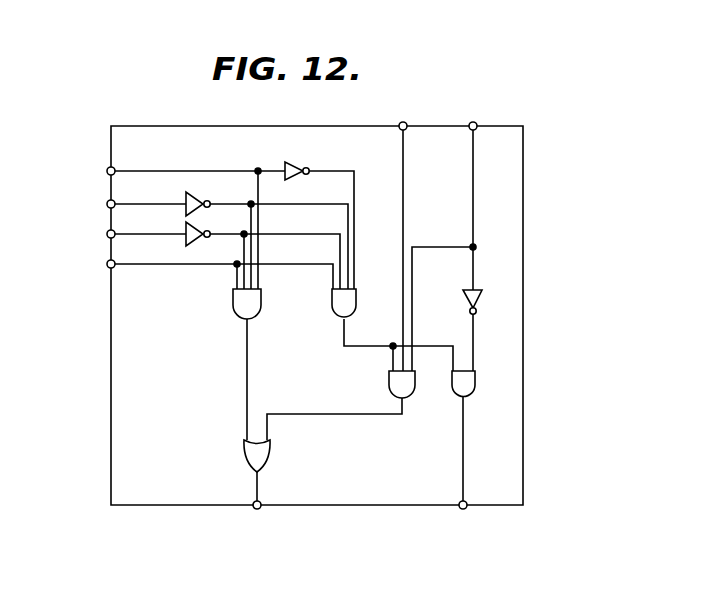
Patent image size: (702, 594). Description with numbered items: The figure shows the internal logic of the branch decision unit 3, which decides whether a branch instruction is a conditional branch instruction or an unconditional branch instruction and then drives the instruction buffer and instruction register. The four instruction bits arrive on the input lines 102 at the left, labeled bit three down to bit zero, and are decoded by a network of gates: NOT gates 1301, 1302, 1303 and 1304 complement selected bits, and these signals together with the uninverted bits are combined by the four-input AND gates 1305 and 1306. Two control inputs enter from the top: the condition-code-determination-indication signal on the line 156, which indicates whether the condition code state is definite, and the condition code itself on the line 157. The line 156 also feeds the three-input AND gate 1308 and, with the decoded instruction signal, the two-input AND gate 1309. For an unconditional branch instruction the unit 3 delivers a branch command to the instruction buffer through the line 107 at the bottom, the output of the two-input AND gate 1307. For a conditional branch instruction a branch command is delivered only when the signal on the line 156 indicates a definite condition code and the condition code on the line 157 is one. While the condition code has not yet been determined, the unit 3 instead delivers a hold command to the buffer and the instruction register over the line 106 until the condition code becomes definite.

The branch decision unit 3 is at (524, 322).
The data bit input lines (BIT 0 - BIT 3) 102 is at (100, 163).
The line 106 is at (460, 511).
The line 107 is at (254, 510).
The line 156 is at (477, 122).
The line 157 is at (400, 122).
The NOT gate 1301 is at (190, 192).
The NOT gate 1302 is at (190, 246).
The NOT gate 1303 is at (262, 300).
The NOT gate 1304 is at (291, 162).
The 4-input AND gate 1305 is at (357, 312).
The 4-input AND gate 1306 is at (414, 396).
The 2-input AND gate 1307 is at (271, 454).
The 3-input AND gate 1308 is at (479, 290).
The 2-input AND gate 1309 is at (476, 380).